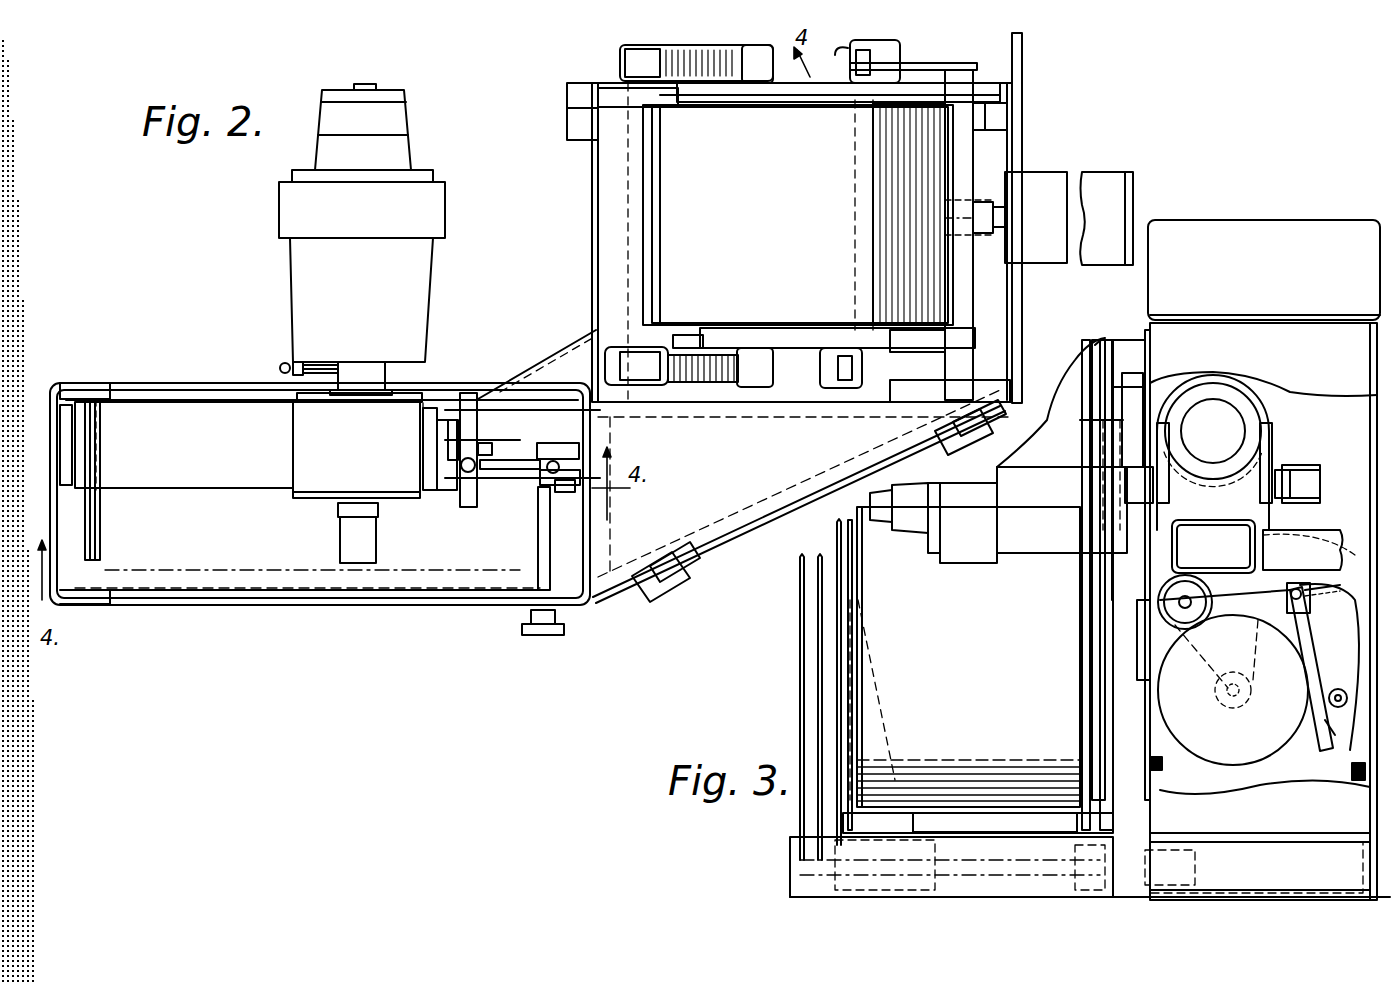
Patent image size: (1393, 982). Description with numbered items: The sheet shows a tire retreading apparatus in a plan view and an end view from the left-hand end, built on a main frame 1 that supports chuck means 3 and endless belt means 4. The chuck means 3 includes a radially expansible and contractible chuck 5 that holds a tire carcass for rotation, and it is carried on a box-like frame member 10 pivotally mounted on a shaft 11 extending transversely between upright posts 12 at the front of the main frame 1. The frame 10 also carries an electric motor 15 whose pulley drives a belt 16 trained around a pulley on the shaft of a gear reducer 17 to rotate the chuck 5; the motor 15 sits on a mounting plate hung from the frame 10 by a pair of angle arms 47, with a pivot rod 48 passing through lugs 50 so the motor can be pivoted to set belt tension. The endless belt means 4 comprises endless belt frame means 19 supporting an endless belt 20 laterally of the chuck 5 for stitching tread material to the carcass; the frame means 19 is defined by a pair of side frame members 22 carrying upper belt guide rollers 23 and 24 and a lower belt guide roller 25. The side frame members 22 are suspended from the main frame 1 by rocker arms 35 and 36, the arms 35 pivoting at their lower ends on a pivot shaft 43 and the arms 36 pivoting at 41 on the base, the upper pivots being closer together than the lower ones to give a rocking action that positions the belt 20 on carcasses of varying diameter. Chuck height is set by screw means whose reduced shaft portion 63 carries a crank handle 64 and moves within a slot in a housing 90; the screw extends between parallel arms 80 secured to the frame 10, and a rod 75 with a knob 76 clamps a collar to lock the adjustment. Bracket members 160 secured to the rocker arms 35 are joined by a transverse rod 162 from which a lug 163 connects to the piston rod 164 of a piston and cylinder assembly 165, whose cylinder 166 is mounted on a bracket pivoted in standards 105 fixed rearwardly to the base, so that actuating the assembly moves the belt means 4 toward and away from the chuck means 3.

In FIG. 2, the main frame 1 is at (620, 603).
In FIG. 3, the main frame 1 is at (777, 876).
In FIG. 2, the chuck means 3 is at (452, 330).
In FIG. 3, the chuck means 3 is at (1050, 565).
In FIG. 3, the endless belt means 4 is at (892, 627).
In FIG. 2, the chuck 5 is at (300, 284).
In FIG. 3, the chuck 5 is at (1023, 547).
In FIG. 2, the box-like frame member 10 is at (232, 478).
In FIG. 3, the box-like frame member 10 is at (1225, 525).
In FIG. 2, the shaft 11 is at (95, 528).
In FIG. 3, the shaft 11 is at (1290, 545).
In FIG. 2, the upright posts 12 is at (112, 397).
In FIG. 3, the electric motor 15 is at (1265, 745).
In FIG. 2, the belt 16 is at (466, 502).
In FIG. 3, the belt 16 is at (1258, 598).
In FIG. 2, the gear reducer 17 is at (316, 482).
In FIG. 2, the endless belt frame means 19 is at (805, 348).
In FIG. 3, the endless belt frame means 19 is at (835, 585).
In FIG. 2, the endless belt 20 is at (805, 266).
In FIG. 3, the endless belt 20 is at (990, 722).
In FIG. 2, the side frame members 22 is at (803, 95).
In FIG. 3, the side frame members 22 is at (832, 575).
In FIG. 2, the upper belt guide roller 23 is at (917, 346).
In FIG. 2, the upper belt guide roller 24 is at (650, 340).
In FIG. 3, the lower belt guide roller 25 is at (835, 805).
In FIG. 2, the rocker arms 35 is at (870, 60).
In FIG. 2, the rocker arms 36 is at (706, 58).
In FIG. 3, the rocker arms 36 is at (806, 612).
In FIG. 2, the pivot 41 is at (628, 183).
In FIG. 3, the pivot 41 is at (1150, 863).
In FIG. 2, the pivot shaft 43 is at (870, 190).
In FIG. 3, the angle arms 47 is at (1332, 648).
In FIG. 3, the pivot rod 48 is at (1327, 695).
In FIG. 3, the lugs 50 is at (1346, 732).
In FIG. 2, the reduced shaft upper portion 63 is at (556, 473).
In FIG. 2, the crank handle 64 is at (503, 466).
In FIG. 2, the rod 75 is at (545, 553).
In FIG. 2, the knob 76 is at (530, 626).
In FIG. 2, the parallel arms 80 is at (500, 412).
In FIG. 3, the housing 90 is at (1262, 232).
In FIG. 3, the standards 105 is at (835, 825).
In FIG. 2, the bracket members 160 is at (945, 62).
In FIG. 2, the rod 162 is at (955, 175).
In FIG. 2, the lug 163 is at (1003, 208).
In FIG. 2, the piston rod 164 is at (1005, 217).
In FIG. 2, the piston and cylinder assembly 165 is at (1104, 172).
In FIG. 2, the cylinder 166 is at (1048, 258).